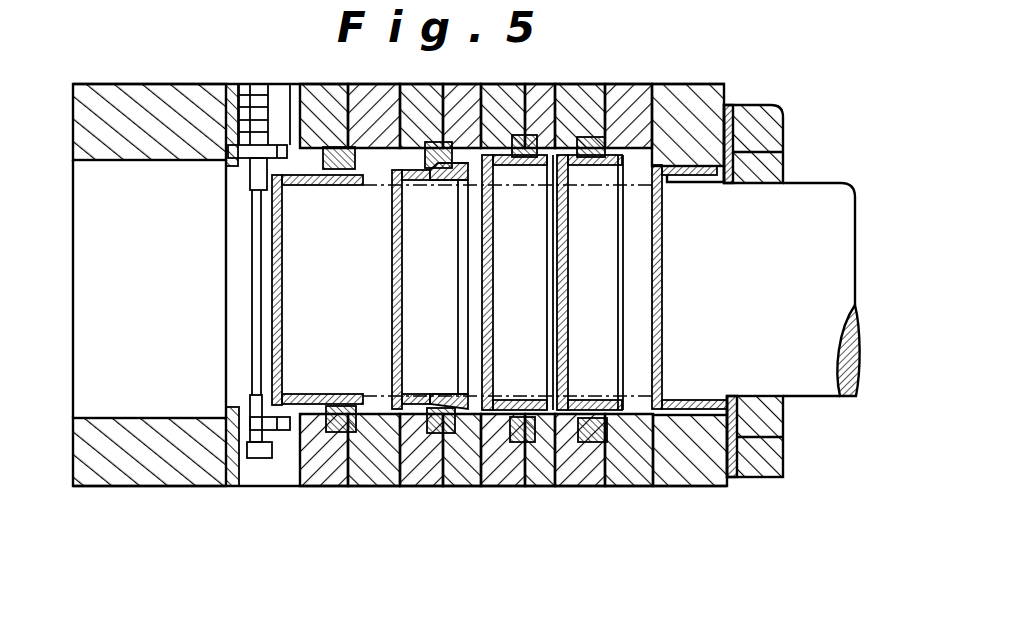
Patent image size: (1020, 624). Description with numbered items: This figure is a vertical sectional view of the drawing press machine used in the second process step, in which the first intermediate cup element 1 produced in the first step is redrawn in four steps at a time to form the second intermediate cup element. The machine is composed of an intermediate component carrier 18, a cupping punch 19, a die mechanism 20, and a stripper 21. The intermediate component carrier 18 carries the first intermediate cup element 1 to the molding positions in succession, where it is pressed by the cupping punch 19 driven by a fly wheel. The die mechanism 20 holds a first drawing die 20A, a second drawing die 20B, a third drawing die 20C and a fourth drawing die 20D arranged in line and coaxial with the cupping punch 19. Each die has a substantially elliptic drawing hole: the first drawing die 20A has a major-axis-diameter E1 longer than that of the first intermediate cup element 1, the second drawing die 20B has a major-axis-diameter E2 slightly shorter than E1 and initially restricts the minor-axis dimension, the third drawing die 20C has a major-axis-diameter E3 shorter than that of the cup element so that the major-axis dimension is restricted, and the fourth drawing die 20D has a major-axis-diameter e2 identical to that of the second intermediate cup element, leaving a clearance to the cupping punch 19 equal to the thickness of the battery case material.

The first intermediate cup element 1 is at (672, 357).
The intermediate component carrier 18 is at (710, 456).
The cupping punch 19 is at (812, 377).
The die mechanism 20 is at (476, 344).
The first drawing die 20A is at (611, 345).
The second drawing die 20B is at (518, 443).
The third drawing die 20C is at (437, 437).
The fourth drawing die 20D is at (336, 434).
The stripper 21 is at (226, 455).
The major-axis-diameter e2 is at (332, 187).
The major-axis-diameter E3 is at (432, 167).
The major-axis-diameter E2 is at (520, 158).
The major-axis-diameter E1 is at (595, 158).